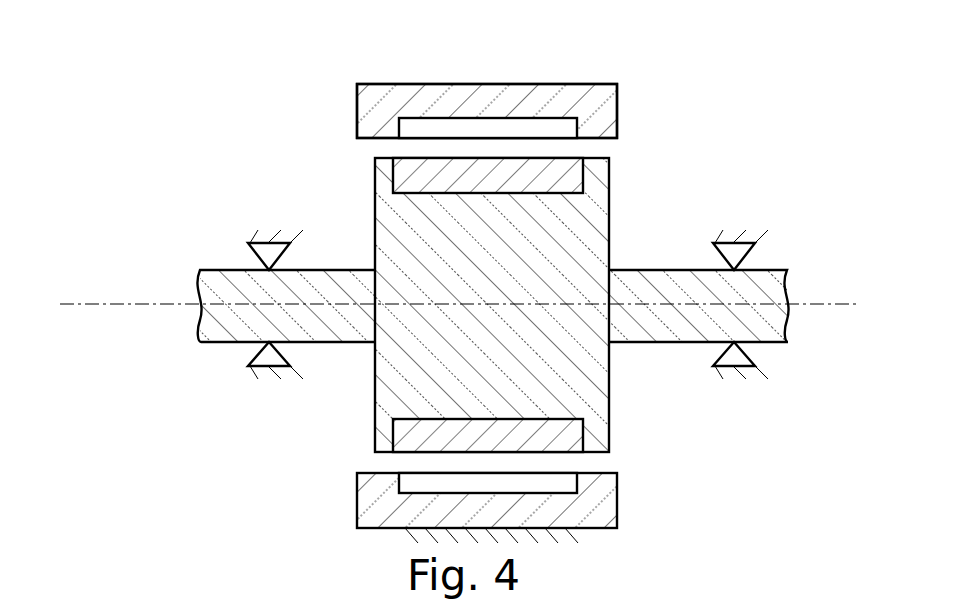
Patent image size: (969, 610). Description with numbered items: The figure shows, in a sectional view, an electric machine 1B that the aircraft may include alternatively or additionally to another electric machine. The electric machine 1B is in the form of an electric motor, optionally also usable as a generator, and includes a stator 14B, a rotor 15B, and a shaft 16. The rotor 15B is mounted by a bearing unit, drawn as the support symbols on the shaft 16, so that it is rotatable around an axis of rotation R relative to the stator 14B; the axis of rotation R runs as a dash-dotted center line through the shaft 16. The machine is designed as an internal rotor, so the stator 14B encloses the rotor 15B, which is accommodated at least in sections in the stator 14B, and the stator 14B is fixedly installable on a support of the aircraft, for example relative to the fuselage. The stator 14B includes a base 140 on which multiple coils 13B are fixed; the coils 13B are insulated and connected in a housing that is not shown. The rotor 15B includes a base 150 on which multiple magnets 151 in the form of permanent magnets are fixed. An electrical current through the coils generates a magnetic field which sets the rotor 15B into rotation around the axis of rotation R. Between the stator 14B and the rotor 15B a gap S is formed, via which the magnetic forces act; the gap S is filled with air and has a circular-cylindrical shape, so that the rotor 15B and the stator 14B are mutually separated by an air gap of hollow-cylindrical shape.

The electric machine 1B is at (491, 273).
The coils 13B is at (432, 126).
The base 140 is at (505, 103).
The stator 14B is at (508, 71).
The gap S is at (618, 148).
The rotor 15B is at (493, 317).
The base 150 is at (597, 228).
The magnets 151 is at (408, 172).
The shaft 16 is at (233, 286).
The axis of rotation R is at (72, 304).